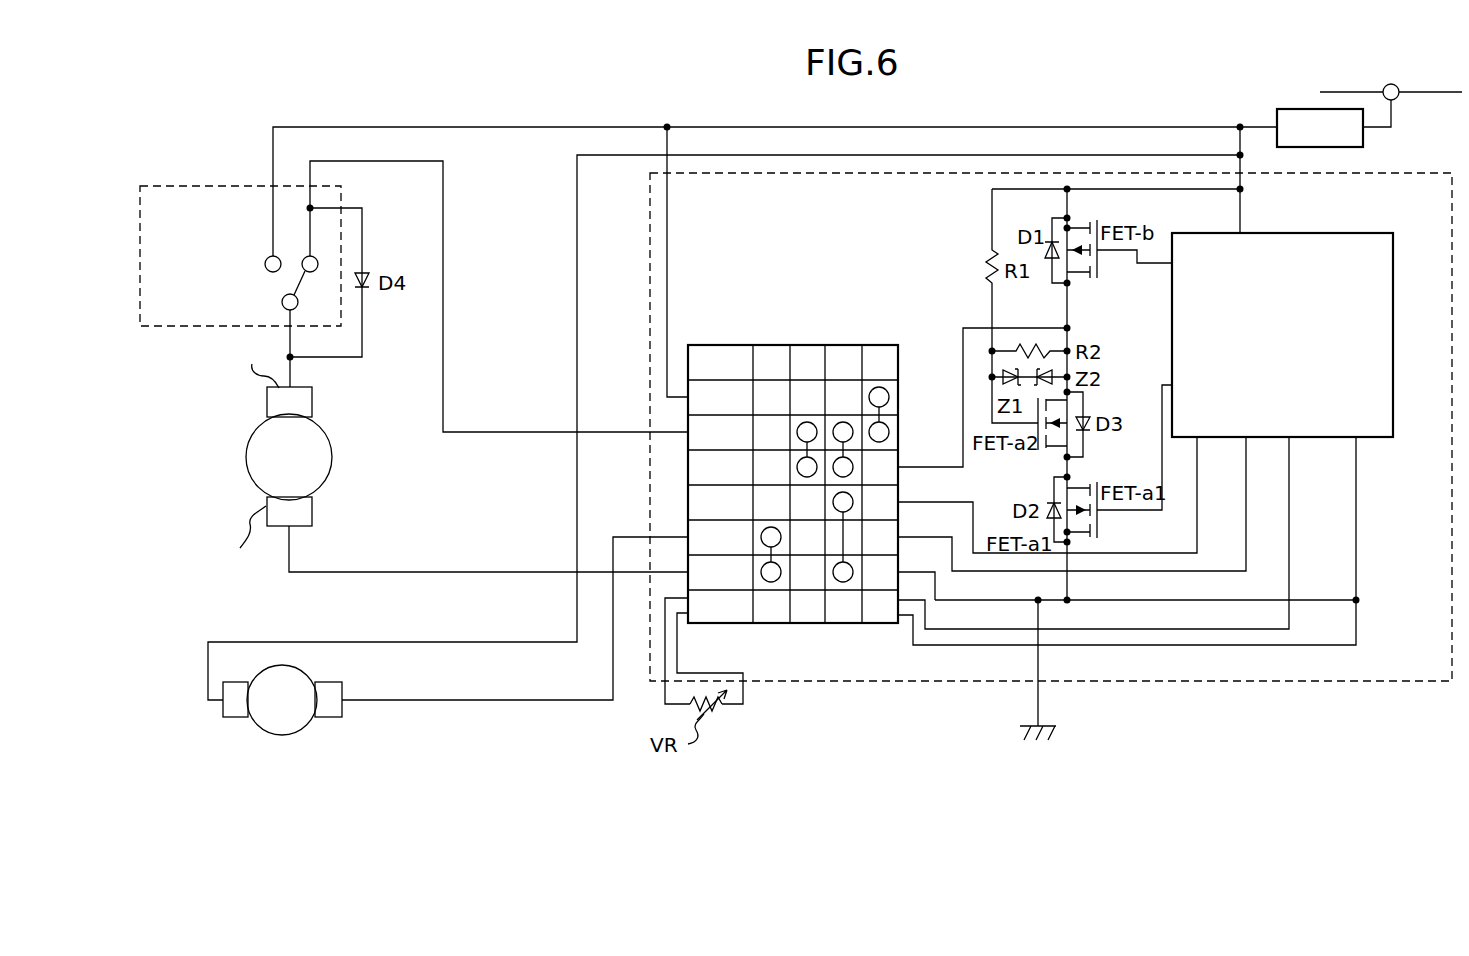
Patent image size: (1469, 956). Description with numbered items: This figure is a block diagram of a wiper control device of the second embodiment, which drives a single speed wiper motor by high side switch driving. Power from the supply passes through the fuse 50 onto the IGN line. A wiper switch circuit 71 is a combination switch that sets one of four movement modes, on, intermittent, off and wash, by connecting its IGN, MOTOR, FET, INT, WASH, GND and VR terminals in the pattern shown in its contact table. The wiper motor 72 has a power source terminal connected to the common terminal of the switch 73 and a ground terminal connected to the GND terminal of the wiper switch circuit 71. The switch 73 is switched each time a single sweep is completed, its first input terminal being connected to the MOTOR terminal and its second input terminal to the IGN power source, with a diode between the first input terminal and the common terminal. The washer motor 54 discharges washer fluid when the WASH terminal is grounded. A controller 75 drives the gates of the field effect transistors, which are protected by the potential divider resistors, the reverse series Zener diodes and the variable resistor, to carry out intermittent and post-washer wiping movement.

The fuse 50 is at (1296, 108).
The washer motor 54 is at (310, 732).
The wiper switch circuit 71 is at (805, 626).
The wiper motor 72 is at (330, 476).
The switch 73 is at (210, 190).
The controller 75 is at (1360, 233).